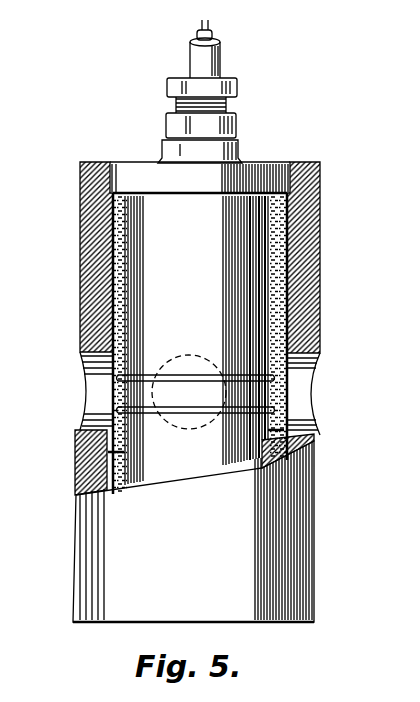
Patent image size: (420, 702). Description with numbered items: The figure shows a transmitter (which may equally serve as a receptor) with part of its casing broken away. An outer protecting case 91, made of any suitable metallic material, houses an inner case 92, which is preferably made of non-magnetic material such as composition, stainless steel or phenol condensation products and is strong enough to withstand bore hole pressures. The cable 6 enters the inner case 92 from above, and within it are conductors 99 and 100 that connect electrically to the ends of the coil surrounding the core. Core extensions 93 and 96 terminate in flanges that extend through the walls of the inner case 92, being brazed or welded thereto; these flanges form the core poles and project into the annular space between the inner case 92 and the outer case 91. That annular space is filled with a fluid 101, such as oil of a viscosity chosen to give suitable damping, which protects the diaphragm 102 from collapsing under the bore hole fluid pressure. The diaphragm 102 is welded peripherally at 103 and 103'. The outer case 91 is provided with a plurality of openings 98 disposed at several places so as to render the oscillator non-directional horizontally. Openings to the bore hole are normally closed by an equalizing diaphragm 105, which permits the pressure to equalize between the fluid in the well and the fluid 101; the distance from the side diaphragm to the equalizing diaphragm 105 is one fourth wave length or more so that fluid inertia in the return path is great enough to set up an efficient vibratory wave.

The cable 6 is at (210, 63).
The outer protecting case 91 is at (320, 258).
The inner case 92 is at (143, 268).
The core extension 93 is at (83, 372).
The core extension 96 is at (80, 418).
The openings 98 is at (298, 405).
The conductor 99 is at (200, 22).
The conductor 100 is at (210, 23).
The fluid 101 is at (282, 222).
The diaphragm 102 is at (112, 390).
The peripheral weld 103 is at (311, 326).
The peripheral weld 103' is at (175, 464).
The equalizing diaphragm 105 is at (106, 623).